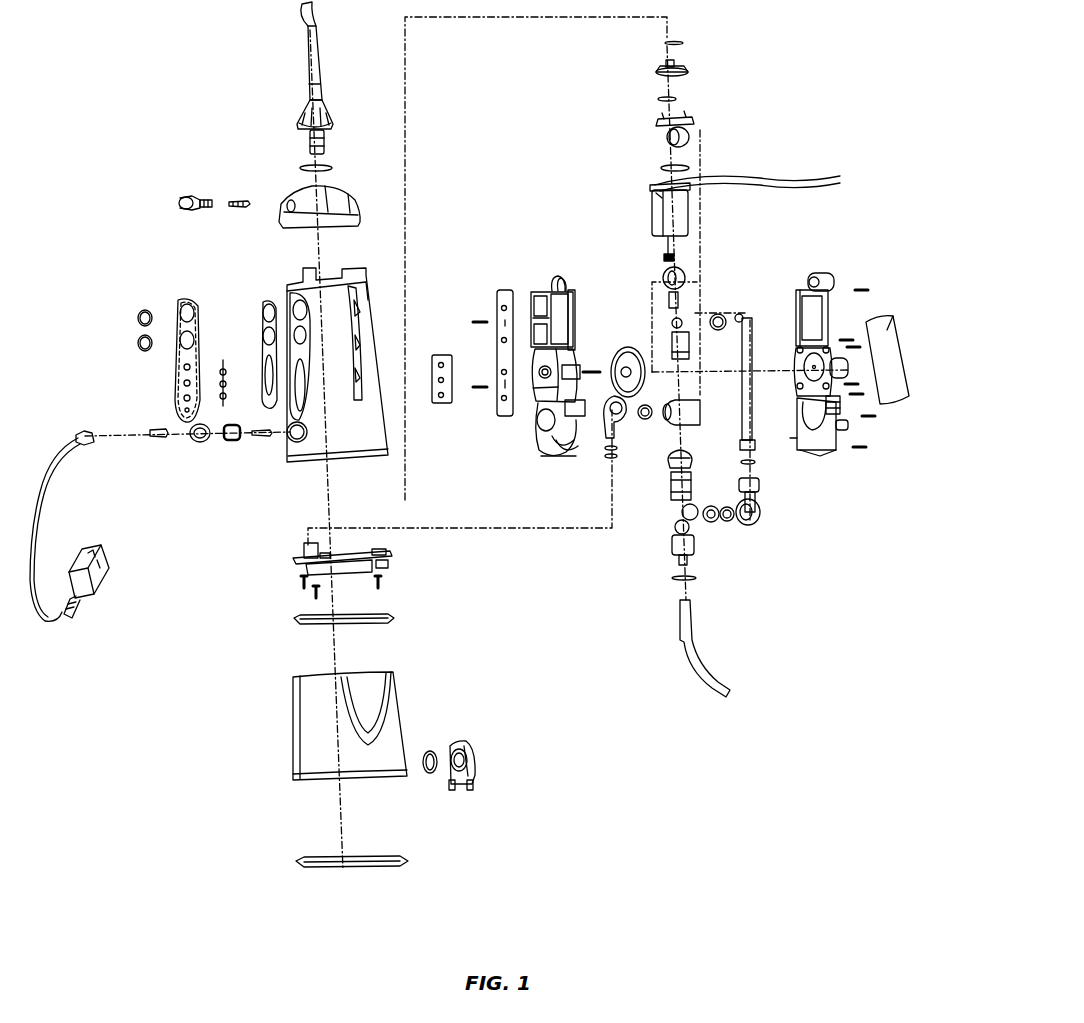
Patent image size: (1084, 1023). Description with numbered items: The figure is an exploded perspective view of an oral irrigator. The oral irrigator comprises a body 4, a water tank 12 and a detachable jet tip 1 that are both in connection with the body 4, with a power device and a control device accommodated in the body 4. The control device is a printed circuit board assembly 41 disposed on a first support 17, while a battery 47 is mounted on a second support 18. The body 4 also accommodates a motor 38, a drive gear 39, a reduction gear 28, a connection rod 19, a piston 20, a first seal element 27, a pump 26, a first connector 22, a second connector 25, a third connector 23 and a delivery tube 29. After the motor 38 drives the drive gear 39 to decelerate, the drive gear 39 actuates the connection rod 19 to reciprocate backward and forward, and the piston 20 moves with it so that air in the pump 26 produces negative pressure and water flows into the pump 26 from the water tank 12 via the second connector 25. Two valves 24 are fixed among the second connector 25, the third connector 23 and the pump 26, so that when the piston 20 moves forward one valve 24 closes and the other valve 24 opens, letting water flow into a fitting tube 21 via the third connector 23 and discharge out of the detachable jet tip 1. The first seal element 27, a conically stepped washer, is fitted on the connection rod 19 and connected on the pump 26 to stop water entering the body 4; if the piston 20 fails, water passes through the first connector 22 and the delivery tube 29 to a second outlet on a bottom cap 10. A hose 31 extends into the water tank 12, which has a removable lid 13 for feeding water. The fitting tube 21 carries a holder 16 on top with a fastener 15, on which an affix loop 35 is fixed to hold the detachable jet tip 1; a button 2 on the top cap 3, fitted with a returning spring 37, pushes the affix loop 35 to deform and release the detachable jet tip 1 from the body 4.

The detachable jet tip 1 is at (305, 107).
The button 2 is at (178, 202).
The top cap 3 is at (279, 222).
The body 4 is at (300, 276).
The bottom cap 10 is at (300, 559).
The water tank 12 is at (310, 690).
The lid 13 is at (470, 784).
The fastener 15 is at (690, 70).
The holder 16 is at (690, 124).
The first support 17 is at (580, 400).
The second support 18 is at (815, 276).
The connection rod 19 is at (680, 317).
The piston 20 is at (688, 332).
The fitting tube 21 is at (752, 424).
The first connector 22 is at (700, 414).
The third connector 23 is at (758, 508).
The valve 24 is at (712, 522).
The second connector 25 is at (692, 555).
The pump 26 is at (675, 505).
The first seal element 27 is at (672, 466).
The reduction gear 28 is at (620, 378).
The delivery tube 29 is at (610, 454).
The hose 31 is at (682, 628).
The affix loop 35 is at (666, 44).
The returning spring 37 is at (232, 203).
The motor 38 is at (652, 198).
The drive gear 39 is at (664, 256).
The printed circuit board assembly 41 is at (511, 312).
The battery 47 is at (894, 318).